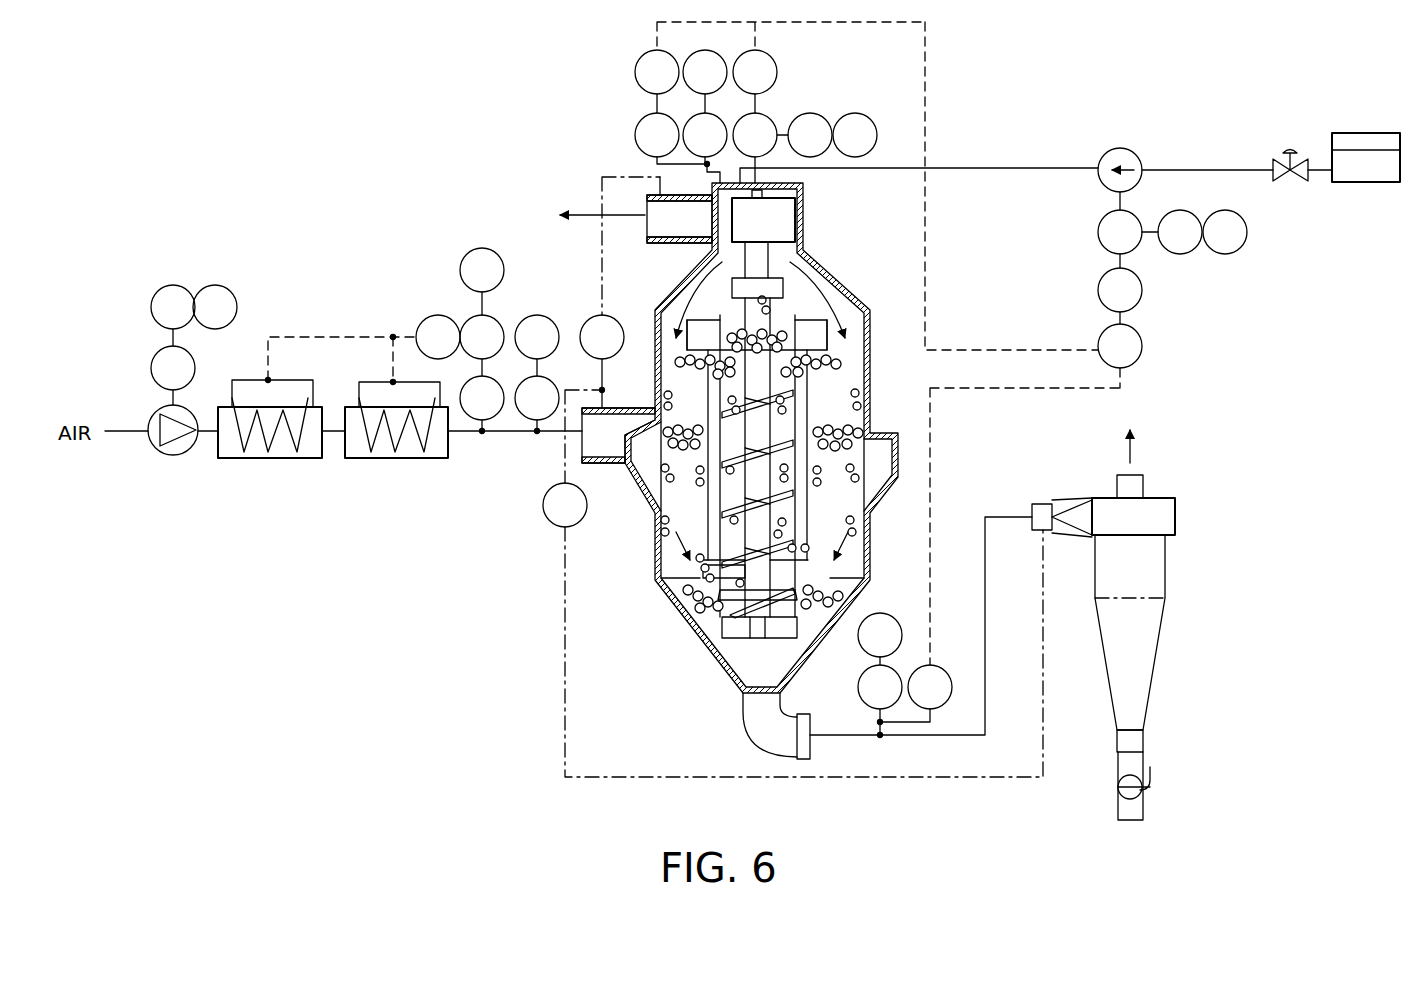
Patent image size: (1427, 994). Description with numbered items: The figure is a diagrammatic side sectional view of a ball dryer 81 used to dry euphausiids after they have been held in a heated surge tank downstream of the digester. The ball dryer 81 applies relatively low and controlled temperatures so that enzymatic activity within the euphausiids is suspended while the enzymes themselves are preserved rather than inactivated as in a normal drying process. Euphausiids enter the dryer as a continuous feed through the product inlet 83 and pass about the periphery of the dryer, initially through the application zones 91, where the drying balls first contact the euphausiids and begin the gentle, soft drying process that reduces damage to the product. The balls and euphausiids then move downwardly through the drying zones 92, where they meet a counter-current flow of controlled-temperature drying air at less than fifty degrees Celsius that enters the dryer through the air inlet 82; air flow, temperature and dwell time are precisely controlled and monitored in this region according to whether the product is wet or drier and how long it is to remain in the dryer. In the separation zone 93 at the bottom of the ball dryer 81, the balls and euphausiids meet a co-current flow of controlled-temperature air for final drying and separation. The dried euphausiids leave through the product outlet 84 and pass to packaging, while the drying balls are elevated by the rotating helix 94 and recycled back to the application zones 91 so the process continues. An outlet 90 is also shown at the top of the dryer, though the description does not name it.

The ball dryer 81 is at (838, 250).
The air inlet 82 is at (608, 468).
The product inlet 83 is at (888, 165).
The product outlet 84 is at (848, 735).
The exhaust outlet 90 is at (668, 245).
The application zones 91 is at (678, 346).
The drying zones 92 is at (665, 445).
The separation zone 93 is at (690, 582).
The rotating helix 94 is at (776, 305).